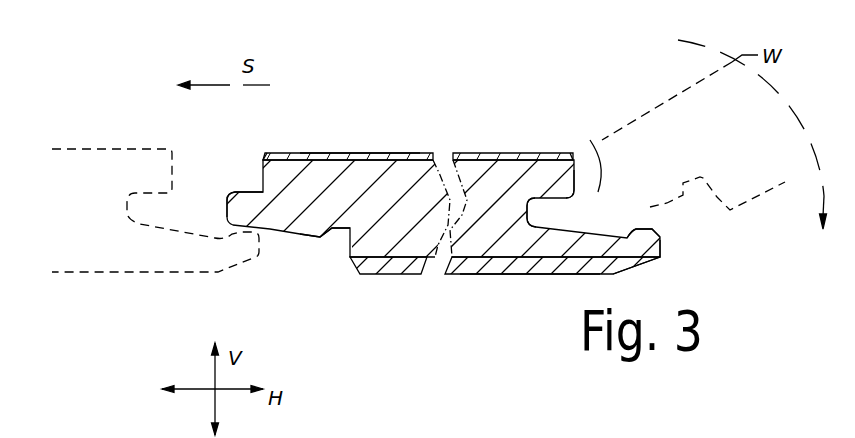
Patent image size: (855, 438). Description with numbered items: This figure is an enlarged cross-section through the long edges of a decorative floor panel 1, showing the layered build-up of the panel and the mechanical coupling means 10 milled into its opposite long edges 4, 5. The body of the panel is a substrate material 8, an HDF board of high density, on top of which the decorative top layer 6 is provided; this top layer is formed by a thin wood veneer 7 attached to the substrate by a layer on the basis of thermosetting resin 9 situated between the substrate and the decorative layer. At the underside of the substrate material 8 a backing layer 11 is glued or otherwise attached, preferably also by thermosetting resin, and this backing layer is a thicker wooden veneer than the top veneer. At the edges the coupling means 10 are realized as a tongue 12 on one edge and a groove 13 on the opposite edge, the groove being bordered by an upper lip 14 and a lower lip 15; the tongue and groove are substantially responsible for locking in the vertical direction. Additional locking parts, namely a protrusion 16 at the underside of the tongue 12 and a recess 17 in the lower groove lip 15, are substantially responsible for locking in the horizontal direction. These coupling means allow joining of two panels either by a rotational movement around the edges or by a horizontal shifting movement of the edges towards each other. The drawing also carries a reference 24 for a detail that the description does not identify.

The floor panel 1 is at (404, 308).
The long edge 4 is at (213, 184).
The long edge 5 is at (722, 180).
The decorative top layer 6 is at (302, 152).
The wood veneer 7 is at (358, 152).
The substrate material 8 is at (500, 227).
The layer on the basis of thermosetting resin 9 is at (493, 152).
The mechanical coupling means 10 is at (240, 280).
The backing layer 11 is at (455, 278).
The tongue 12 is at (275, 217).
The groove 13 is at (585, 207).
The upper lip 14 is at (578, 172).
The lower lip 15 is at (598, 280).
The protrusion 16 is at (317, 237).
The recess 17 is at (650, 229).
The chamfer 24 is at (263, 152).